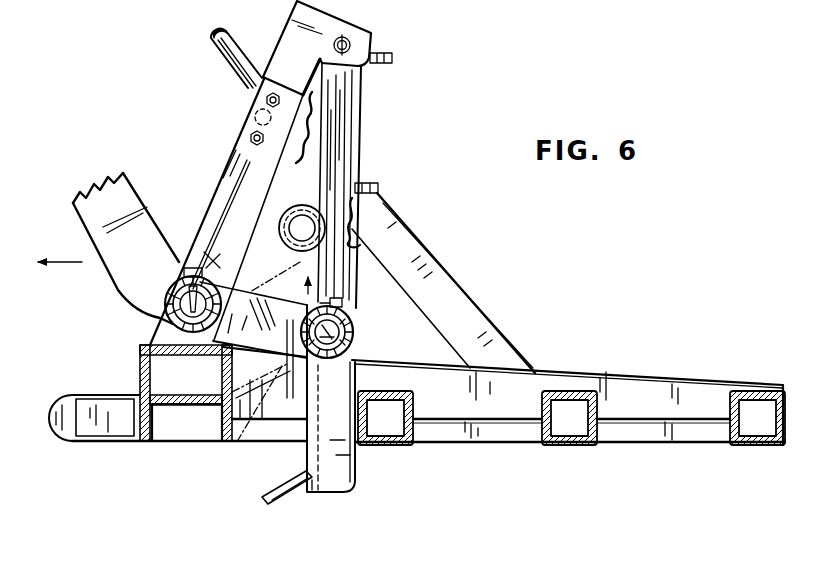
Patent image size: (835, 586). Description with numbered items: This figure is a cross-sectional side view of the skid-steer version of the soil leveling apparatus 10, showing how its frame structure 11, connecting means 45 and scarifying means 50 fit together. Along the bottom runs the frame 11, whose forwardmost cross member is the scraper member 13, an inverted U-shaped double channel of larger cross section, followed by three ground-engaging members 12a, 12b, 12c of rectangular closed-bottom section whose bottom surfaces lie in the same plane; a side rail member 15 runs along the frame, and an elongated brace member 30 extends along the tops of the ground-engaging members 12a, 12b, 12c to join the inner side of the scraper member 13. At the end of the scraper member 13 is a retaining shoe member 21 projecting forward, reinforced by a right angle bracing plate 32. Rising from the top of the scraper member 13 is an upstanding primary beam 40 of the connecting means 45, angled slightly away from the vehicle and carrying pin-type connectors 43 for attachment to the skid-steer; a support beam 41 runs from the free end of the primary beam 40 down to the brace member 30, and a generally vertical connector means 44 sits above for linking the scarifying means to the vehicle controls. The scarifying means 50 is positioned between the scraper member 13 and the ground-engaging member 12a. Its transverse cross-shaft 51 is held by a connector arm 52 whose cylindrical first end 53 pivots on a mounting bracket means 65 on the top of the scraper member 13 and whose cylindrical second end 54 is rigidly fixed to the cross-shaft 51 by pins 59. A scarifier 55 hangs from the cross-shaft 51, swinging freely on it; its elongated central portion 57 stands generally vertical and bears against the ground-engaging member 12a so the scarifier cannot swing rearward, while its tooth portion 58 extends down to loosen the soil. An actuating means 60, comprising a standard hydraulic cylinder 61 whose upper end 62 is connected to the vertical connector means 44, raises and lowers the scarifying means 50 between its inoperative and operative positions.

The soil leveling apparatus 10 is at (468, 116).
The frame structure 11 is at (614, 371).
The ground-engaging member 12a is at (414, 393).
The ground-engaging member 12b is at (598, 406).
The ground-engaging member 12c is at (747, 392).
The scraper member 13 is at (140, 364).
The side rail member 15 is at (633, 442).
The retaining shoe member 21 is at (72, 441).
The brace member 30 is at (670, 386).
The right angle bracing plate 32 is at (112, 436).
The primary beam 40 is at (218, 184).
The support beam 41 is at (384, 212).
The connectors 43 is at (258, 108).
The vertical connector means 44 is at (296, 16).
The connecting means 45 is at (212, 164).
The scarifying means 50 is at (284, 204).
The cross-shaft 51 is at (282, 216).
The connector arm 52 is at (250, 392).
The first end 53 is at (168, 288).
The second end 54 is at (337, 299).
The scarifier 55 is at (300, 462).
The central portion 57 is at (338, 455).
The tooth portion 58 is at (193, 394).
The pins 59 is at (342, 305).
The actuating means 60 is at (366, 117).
The hydraulic cylinder 61 is at (346, 146).
The upper end 62 is at (368, 70).
The mounting bracket means 65 is at (170, 323).